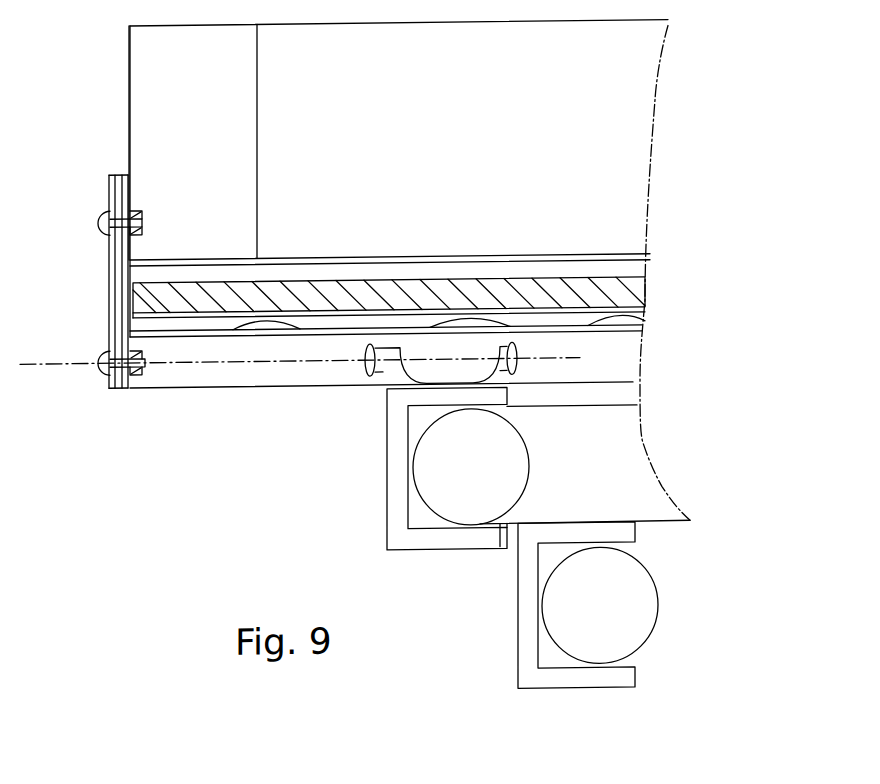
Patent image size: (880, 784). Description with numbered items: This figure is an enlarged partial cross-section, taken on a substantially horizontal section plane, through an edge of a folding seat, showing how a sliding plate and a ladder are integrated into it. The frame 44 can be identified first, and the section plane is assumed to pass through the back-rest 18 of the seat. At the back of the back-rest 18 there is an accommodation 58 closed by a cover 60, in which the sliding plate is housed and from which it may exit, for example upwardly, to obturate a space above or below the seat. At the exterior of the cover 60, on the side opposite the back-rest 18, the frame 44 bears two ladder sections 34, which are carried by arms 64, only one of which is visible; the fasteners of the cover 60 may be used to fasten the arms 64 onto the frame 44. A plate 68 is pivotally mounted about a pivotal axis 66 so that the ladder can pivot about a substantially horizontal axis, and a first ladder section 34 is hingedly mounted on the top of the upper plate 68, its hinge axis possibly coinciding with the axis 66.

The back-rest 18 is at (650, 106).
The frame 44 is at (150, 70).
The accommodation 58 is at (135, 278).
The cover 60 is at (120, 305).
The arm 64 is at (113, 340).
The pivotal axis 66 is at (108, 374).
The plate 68 is at (200, 378).
The ladder section 34 is at (425, 470).